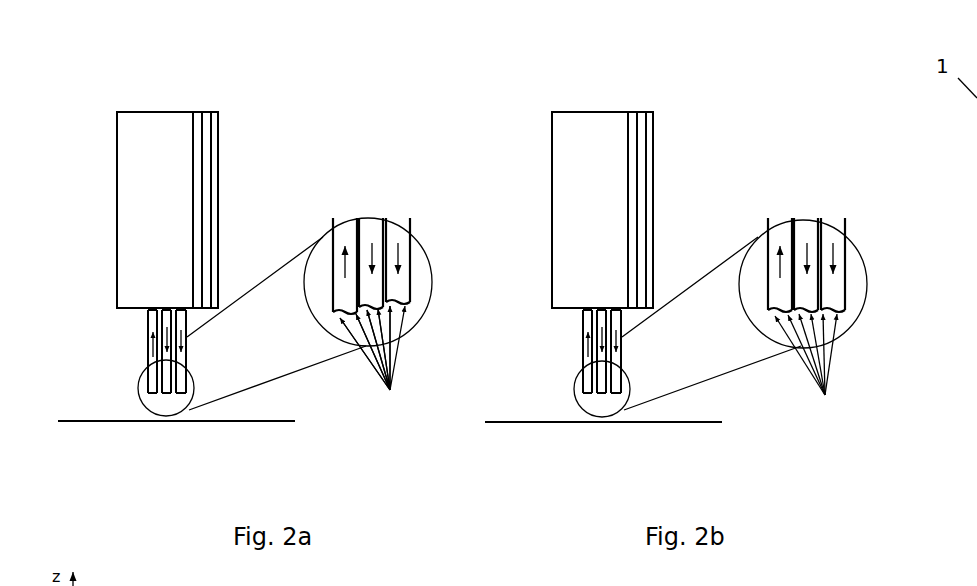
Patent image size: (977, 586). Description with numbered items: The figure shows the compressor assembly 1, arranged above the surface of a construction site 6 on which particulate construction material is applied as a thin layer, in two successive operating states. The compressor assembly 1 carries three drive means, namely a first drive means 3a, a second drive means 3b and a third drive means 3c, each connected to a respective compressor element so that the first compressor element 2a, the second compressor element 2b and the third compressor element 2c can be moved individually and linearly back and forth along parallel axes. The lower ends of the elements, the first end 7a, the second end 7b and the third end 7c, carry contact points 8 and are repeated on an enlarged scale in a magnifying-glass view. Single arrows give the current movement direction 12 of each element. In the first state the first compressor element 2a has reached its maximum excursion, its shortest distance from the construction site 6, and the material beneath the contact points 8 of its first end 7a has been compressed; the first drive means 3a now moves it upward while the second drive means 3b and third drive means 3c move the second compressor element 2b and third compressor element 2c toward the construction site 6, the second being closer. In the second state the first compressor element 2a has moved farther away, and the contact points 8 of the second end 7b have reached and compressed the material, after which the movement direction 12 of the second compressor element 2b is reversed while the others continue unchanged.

In FIG. 2a, the compressor assembly 1 is at (107, 173).
In FIG. 2b, the compressor assembly 1 is at (551, 179).
In FIG. 2a, the first compressor element 2a is at (152, 338).
In FIG. 2b, the first compressor element 2a is at (651, 273).
In FIG. 2a, the second compressor element 2b is at (166, 327).
In FIG. 2b, the second compressor element 2b is at (664, 273).
In FIG. 2a, the third compressor element 2c is at (185, 337).
In FIG. 2b, the third compressor element 2c is at (728, 273).
In FIG. 2a, the first drive means 3a is at (150, 125).
In FIG. 2b, the first drive means 3a is at (582, 170).
In FIG. 2a, the second drive means 3b is at (197, 122).
In FIG. 2b, the second drive means 3b is at (623, 170).
In FIG. 2a, the third drive means 3c is at (208, 123).
In FIG. 2b, the third drive means 3c is at (658, 170).
In FIG. 2a, the construction site 6 is at (270, 423).
In FIG. 2b, the construction site 6 is at (615, 444).
In FIG. 2a, the first end 7a is at (152, 399).
In FIG. 2b, the first end 7a is at (664, 370).
In FIG. 2a, the second end 7b is at (167, 399).
In FIG. 2b, the second end 7b is at (759, 338).
In FIG. 2a, the third end 7c is at (181, 399).
In FIG. 2b, the third end 7c is at (773, 357).
In FIG. 2a, the contact points 8 is at (372, 363).
In FIG. 2b, the contact points 8 is at (806, 368).
In FIG. 2a, the movement direction 12 is at (178, 343).
In FIG. 2b, the movement direction 12 is at (696, 278).